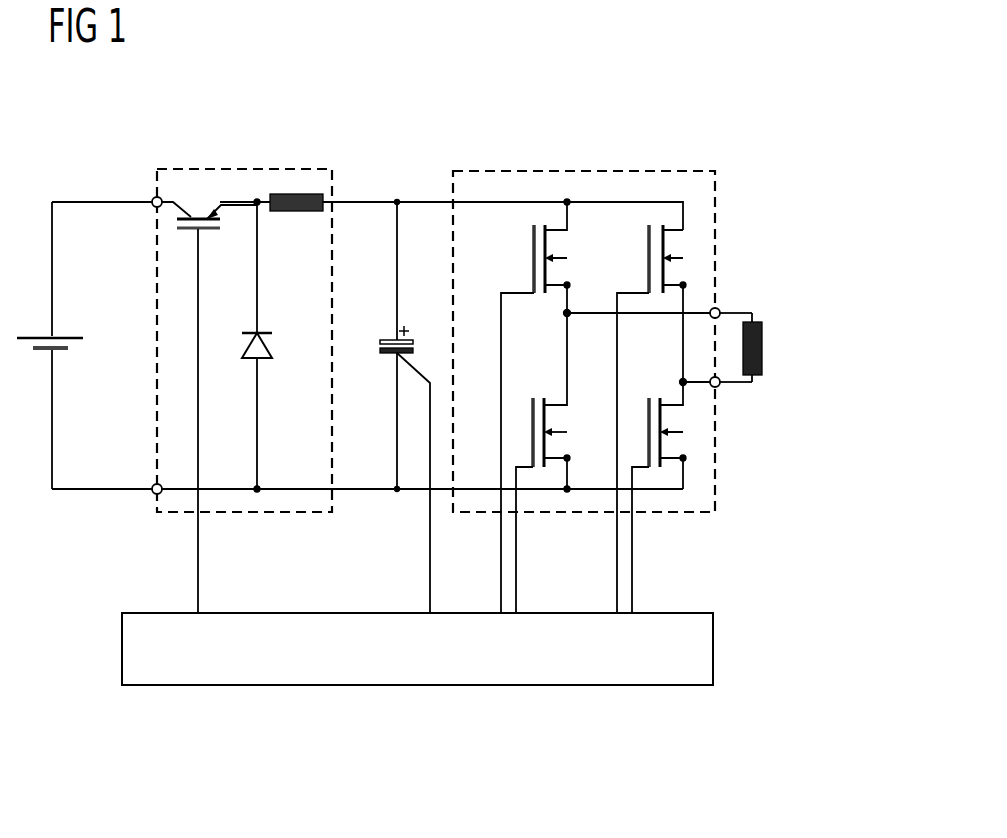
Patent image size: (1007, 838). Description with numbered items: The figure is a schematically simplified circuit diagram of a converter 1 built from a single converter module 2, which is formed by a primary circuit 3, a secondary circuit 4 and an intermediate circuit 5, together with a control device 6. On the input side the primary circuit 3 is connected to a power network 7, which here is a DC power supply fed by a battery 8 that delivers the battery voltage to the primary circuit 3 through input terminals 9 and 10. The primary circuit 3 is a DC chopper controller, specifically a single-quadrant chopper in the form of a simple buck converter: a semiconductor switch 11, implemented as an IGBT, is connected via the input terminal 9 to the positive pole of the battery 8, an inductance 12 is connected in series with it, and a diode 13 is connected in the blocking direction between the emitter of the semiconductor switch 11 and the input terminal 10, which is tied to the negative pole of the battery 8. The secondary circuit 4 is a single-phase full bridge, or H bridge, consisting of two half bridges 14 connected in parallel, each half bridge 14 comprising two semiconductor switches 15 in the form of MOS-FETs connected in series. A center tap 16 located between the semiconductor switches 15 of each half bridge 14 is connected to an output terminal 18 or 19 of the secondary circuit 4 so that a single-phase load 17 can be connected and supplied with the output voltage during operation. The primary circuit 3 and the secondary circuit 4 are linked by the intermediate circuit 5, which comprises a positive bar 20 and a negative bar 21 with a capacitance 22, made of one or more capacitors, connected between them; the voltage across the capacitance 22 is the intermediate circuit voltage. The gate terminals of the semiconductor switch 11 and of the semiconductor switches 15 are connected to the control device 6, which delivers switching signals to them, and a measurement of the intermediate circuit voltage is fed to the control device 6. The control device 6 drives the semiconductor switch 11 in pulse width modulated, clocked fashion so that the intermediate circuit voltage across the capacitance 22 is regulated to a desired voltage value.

The converter 1 is at (532, 95).
The converter module 2 is at (383, 328).
The primary circuit 3 is at (237, 169).
The secondary circuit 4 is at (613, 171).
The intermediate circuit 5 is at (367, 346).
The control device 6 is at (605, 686).
The power network 7 is at (75, 202).
The battery 8 is at (42, 336).
The input terminal 9 is at (153, 200).
The input terminal 10 is at (153, 493).
The semiconductor switch 11 is at (198, 202).
The inductance 12 is at (297, 194).
The diode 13 is at (256, 333).
The half bridge 14 is at (568, 302).
The semiconductor switch 15 is at (533, 246).
The center tap 16 is at (565, 313).
The load 17 is at (763, 334).
The output terminal 18 is at (719, 312).
The output terminal 19 is at (720, 388).
The positive bar 20 is at (372, 202).
The negative bar 21 is at (360, 490).
The capacitance 22 is at (392, 340).